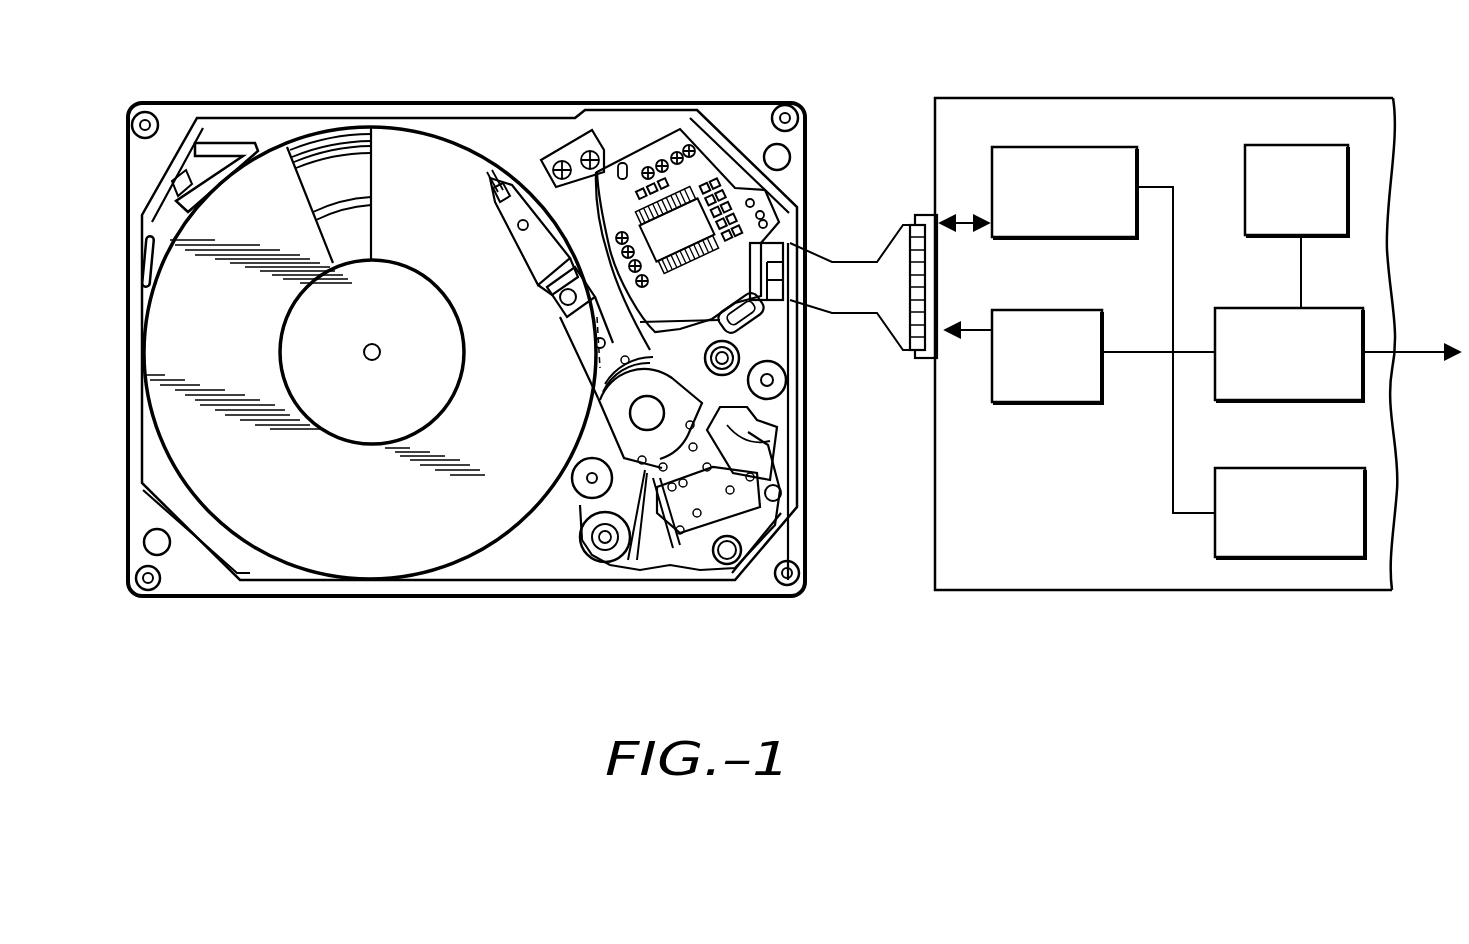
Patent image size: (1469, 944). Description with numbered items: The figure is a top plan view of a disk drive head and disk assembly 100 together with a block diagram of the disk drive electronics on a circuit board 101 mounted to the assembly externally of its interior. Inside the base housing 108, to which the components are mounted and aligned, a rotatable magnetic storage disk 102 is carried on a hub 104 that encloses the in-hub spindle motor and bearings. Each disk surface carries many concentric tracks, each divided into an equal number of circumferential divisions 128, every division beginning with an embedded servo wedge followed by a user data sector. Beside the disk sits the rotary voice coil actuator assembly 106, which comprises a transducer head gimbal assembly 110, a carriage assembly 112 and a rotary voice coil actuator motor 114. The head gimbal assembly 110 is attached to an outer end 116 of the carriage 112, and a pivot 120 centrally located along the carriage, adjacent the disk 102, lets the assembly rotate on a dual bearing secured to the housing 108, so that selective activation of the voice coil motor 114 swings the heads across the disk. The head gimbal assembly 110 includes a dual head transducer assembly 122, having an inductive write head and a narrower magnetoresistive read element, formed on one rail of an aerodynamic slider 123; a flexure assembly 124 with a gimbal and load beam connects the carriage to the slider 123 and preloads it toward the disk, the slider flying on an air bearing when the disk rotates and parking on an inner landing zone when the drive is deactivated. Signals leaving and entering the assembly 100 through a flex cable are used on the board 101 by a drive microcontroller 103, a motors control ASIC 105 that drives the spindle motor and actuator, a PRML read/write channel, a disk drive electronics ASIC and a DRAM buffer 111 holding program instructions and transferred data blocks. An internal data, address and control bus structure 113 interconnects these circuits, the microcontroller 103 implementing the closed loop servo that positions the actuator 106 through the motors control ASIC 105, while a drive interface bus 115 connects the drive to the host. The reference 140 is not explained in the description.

The head and disk assembly 100 is at (794, 638).
The circuit board 101 is at (1032, 598).
The magnetic storage disk 102 is at (311, 550).
The drive microcontroller 103 is at (1332, 468).
The hub 104 is at (390, 418).
The motors control ASIC 105 is at (1034, 403).
The rotary voice coil actuator assembly 106 is at (598, 447).
The base housing 108 is at (198, 598).
The transducer head gimbal assembly 110 is at (498, 230).
The DRAM buffer 111 is at (1270, 236).
The carriage assembly 112 is at (607, 372).
The bus structure 113 is at (1173, 468).
The rotary voice coil actuator motor 114 is at (764, 455).
The drive interface bus 115 is at (1423, 350).
The outer end 116 is at (547, 290).
The pivot 120 is at (630, 413).
The dual head transducer assembly 122 is at (490, 200).
The aerodynamic slider 123 is at (489, 183).
The flexure assembly 124 is at (537, 263).
The circumferential divisions 128 is at (366, 255).
The head disk assembly 140 is at (820, 179).